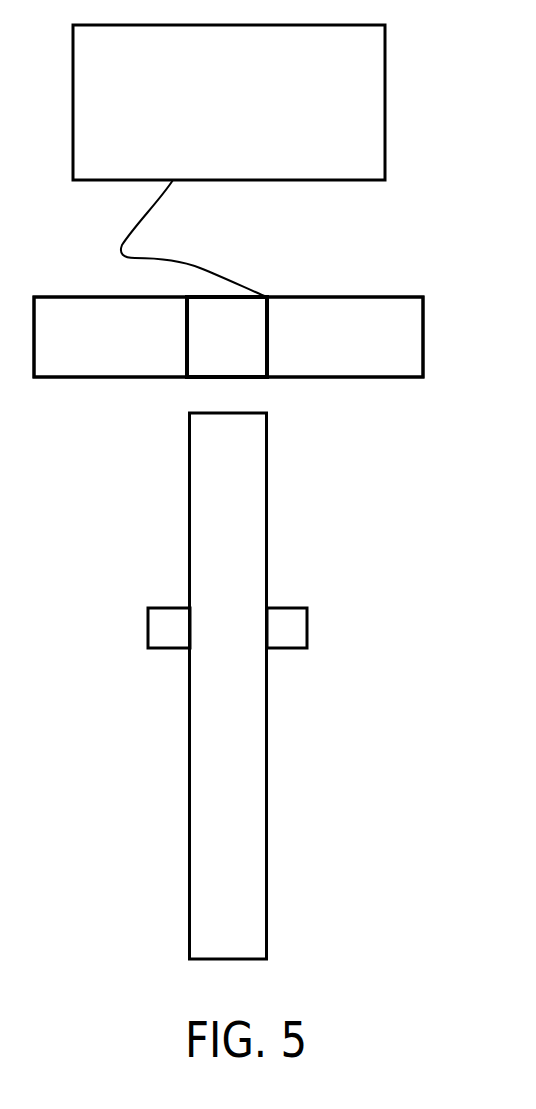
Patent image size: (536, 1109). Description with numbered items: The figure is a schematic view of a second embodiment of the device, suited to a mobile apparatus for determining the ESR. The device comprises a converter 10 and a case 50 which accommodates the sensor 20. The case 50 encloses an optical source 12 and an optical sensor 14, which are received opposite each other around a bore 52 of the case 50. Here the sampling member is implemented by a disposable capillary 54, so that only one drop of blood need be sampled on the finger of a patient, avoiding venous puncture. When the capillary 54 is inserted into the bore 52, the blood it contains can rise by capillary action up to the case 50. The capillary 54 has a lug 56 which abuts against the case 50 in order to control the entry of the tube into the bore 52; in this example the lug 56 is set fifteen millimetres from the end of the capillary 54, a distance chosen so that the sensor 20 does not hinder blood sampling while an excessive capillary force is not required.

The converter 10 is at (229, 102).
The optical source 12 is at (110, 337).
The optical sensor 14 is at (345, 337).
The sensor 20 is at (112, 428).
The case 50 is at (423, 335).
The bore 52 is at (194, 278).
The disposable capillary 54 is at (228, 686).
The lug 56 is at (307, 608).